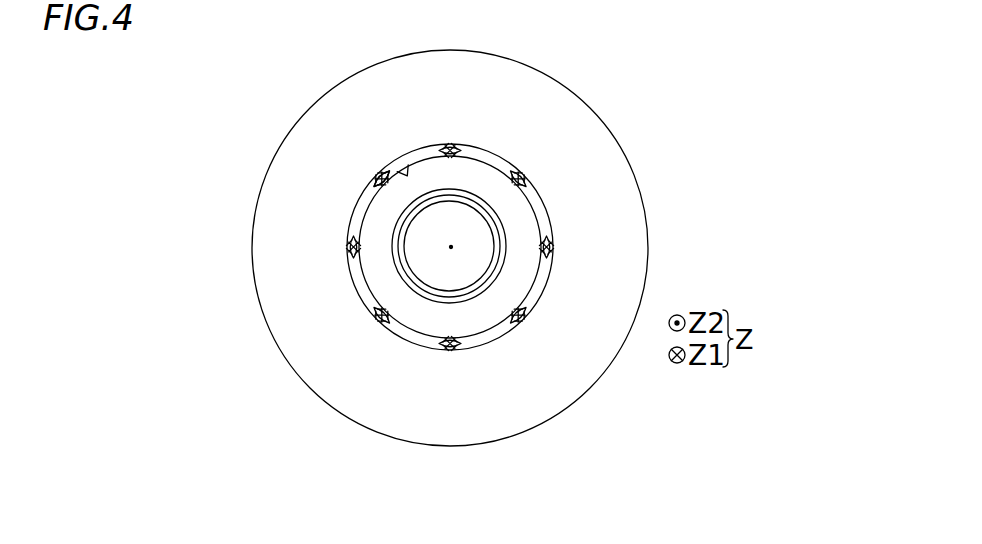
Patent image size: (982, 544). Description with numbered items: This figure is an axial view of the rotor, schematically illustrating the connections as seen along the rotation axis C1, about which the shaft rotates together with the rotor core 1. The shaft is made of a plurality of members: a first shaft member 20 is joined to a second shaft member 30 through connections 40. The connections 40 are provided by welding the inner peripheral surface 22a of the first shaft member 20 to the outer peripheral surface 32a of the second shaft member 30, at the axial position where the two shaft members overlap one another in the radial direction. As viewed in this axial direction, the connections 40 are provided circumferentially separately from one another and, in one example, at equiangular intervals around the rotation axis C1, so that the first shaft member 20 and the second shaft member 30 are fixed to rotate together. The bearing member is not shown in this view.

The rotor core 1 is at (598, 383).
The first shaft member 20 is at (533, 303).
The inner peripheral surface 22a is at (410, 152).
The second shaft member 30 is at (423, 318).
The outer peripheral surface 32a is at (392, 165).
The connection 40 is at (378, 178).
The rotation axis C1 is at (451, 245).